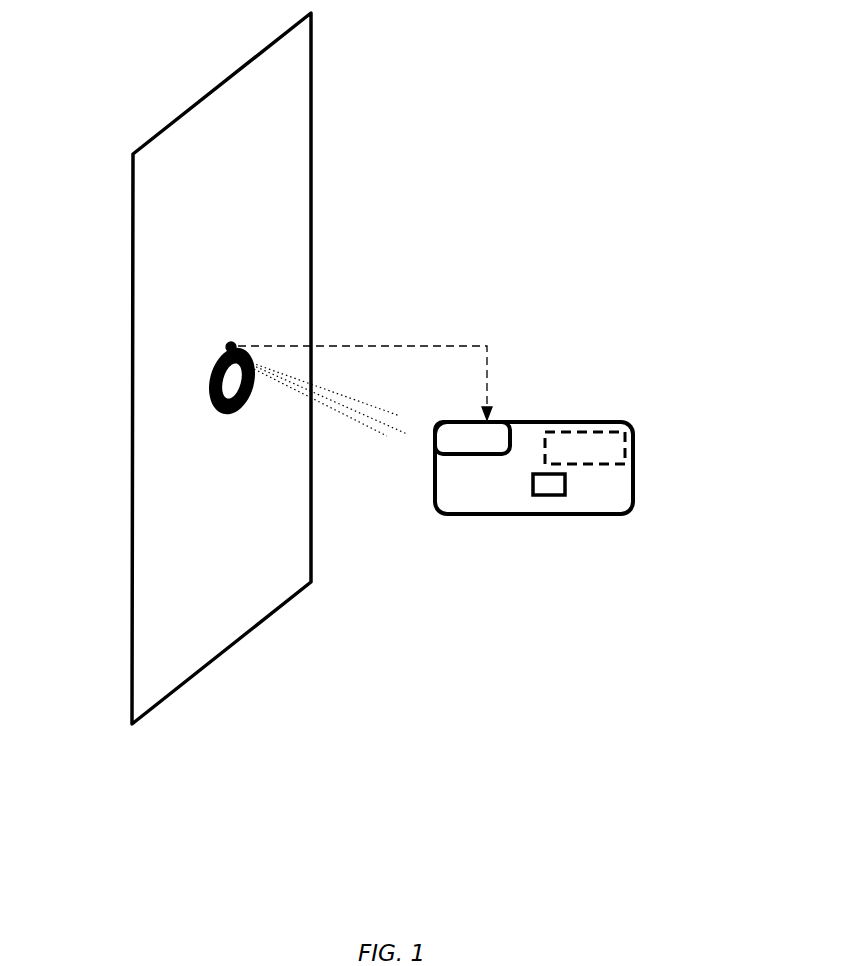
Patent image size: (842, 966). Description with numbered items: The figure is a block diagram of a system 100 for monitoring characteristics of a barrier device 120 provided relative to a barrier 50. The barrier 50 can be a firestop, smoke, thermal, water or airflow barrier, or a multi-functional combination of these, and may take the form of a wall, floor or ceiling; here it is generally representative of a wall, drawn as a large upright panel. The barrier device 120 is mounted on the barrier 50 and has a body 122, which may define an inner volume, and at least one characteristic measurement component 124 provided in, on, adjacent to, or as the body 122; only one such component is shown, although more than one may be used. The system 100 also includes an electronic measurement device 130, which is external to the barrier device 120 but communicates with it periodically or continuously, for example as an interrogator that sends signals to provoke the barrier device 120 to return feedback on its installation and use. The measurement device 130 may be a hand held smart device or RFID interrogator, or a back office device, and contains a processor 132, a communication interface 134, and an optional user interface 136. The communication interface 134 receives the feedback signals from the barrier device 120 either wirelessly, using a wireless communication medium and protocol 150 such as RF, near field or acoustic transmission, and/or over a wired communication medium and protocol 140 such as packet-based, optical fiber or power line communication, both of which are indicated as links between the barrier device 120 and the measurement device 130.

The system 100 is at (622, 265).
The barrier 50 is at (298, 83).
The barrier device 120 is at (187, 355).
The body 122 is at (210, 399).
The characteristic measurement component 124 is at (234, 345).
The measurement device 130 is at (640, 440).
The processor 132 is at (552, 487).
The communication interface 134 is at (457, 443).
The user interface 136 is at (587, 445).
The wired communication medium and protocol 140 is at (415, 348).
The wireless communication medium and protocol 150 is at (323, 402).